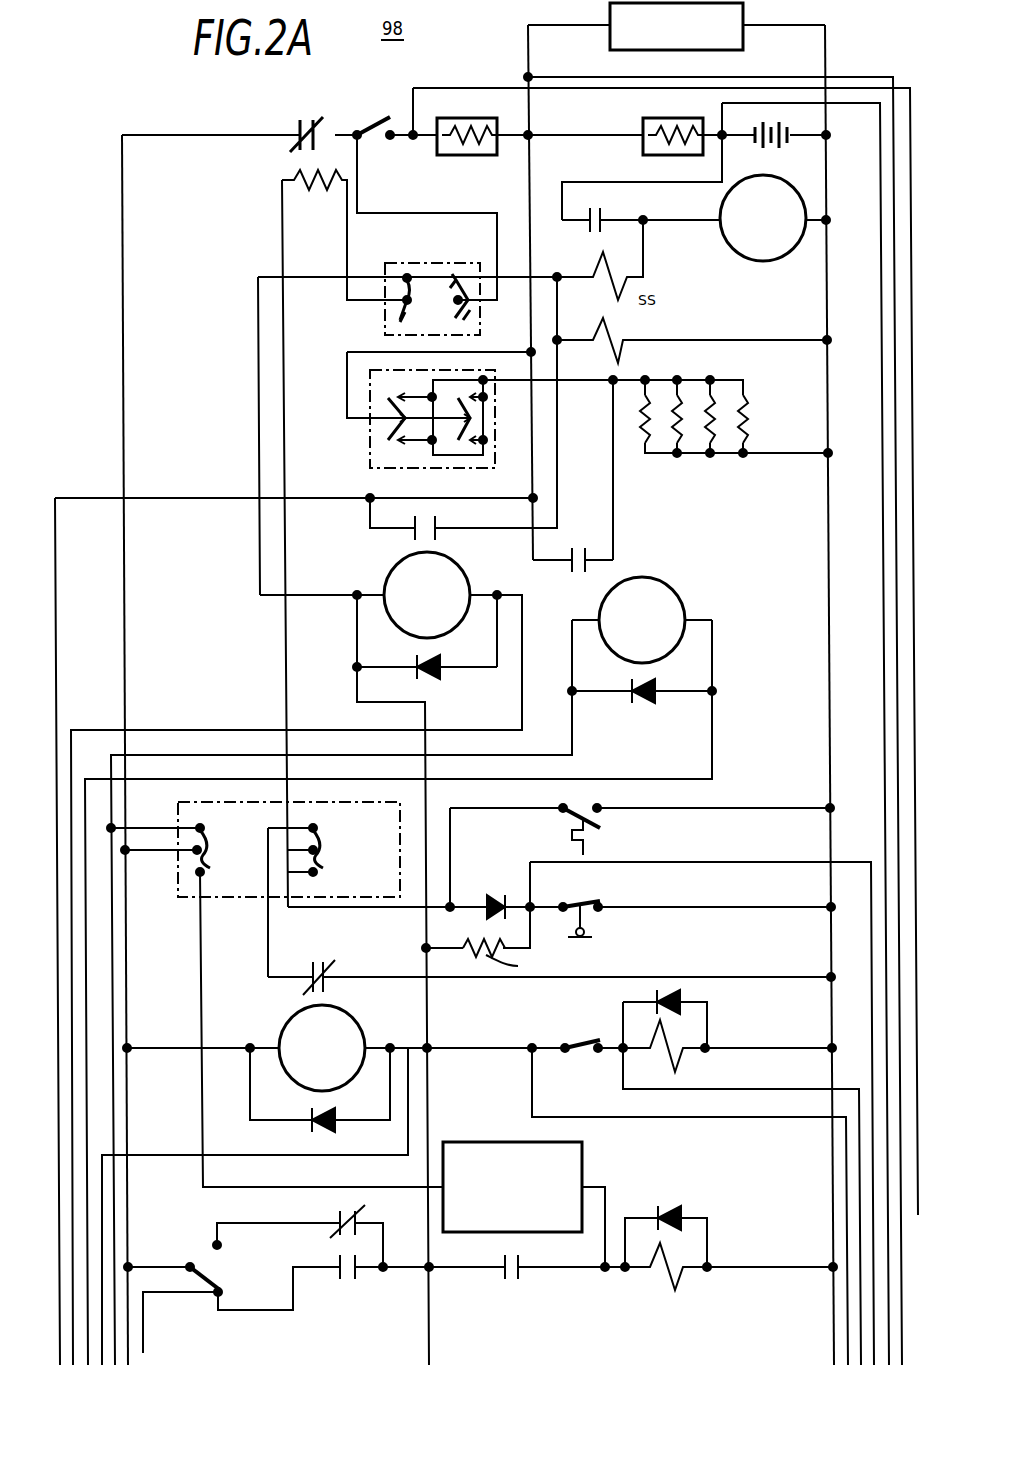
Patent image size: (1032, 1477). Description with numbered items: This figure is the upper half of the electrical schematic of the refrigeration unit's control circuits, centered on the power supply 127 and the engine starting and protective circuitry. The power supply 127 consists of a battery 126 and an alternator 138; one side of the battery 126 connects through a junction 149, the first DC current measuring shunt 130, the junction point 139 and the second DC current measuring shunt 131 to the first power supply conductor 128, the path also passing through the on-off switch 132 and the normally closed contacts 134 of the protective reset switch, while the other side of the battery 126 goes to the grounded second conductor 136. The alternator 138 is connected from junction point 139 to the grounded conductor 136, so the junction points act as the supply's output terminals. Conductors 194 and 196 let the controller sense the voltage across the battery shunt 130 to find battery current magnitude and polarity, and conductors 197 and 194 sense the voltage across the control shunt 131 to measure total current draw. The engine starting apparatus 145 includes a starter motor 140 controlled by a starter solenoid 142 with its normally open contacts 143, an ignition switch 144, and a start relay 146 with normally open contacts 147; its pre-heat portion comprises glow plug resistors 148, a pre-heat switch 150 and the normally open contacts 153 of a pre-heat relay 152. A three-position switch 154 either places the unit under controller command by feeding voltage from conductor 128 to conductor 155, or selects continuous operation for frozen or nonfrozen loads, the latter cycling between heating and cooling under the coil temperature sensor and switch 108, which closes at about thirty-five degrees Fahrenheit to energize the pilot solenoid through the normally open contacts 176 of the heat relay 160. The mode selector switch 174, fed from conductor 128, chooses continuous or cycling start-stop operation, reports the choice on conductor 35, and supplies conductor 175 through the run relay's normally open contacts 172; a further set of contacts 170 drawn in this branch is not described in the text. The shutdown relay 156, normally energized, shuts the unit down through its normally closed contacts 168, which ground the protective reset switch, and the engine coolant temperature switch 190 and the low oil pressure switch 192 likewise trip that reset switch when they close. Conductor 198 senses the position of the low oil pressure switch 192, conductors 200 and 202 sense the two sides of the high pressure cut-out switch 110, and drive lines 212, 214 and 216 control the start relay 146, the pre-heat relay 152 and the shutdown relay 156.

The coil temperature sensor and switch 108 is at (586, 1160).
The high refrigerant pressure cut-out switch 110 is at (586, 1050).
The battery 126 is at (772, 150).
The power supply 127 is at (801, 58).
The first power supply conductor 128 is at (122, 150).
The first DC current measuring shunt 130 is at (645, 150).
The second DC current measuring shunt 131 is at (448, 157).
The on-off switch 132 is at (385, 115).
The normally closed contacts 134 is at (303, 120).
The second power supply conductor 136 is at (830, 249).
The alternator 138 is at (612, 50).
The junction point 139 is at (530, 135).
The starter motor 140 is at (762, 262).
The starter solenoid 142 is at (594, 319).
The normally open contacts 143 is at (598, 210).
The ignition switch 144 is at (430, 265).
The engine starting apparatus 145 is at (716, 259).
The start relay 146 is at (513, 584).
The normally open contacts 147 is at (413, 538).
The glow plug resistors 148 is at (748, 400).
The junction 149 is at (722, 142).
The pre-heat switch 150 is at (370, 452).
The pre-heat relay 152 is at (722, 609).
The normally open contacts 153 is at (590, 548).
The three-position switch 154 is at (231, 898).
The conductor 155 is at (114, 1000).
The shutdown relay 156 is at (409, 1029).
The heat relay 160 is at (577, 1309).
The normally closed contacts 168 is at (325, 948).
The switch 170 is at (342, 1215).
The normally open contacts 172 is at (348, 1282).
The mode selector switch 174 is at (215, 1245).
The conductor 175 is at (431, 1075).
The normally open contacts 176 is at (508, 1280).
The engine coolant temperature switch 190 is at (570, 816).
The low oil pressure switch 192 is at (592, 913).
The conductor 194 is at (840, 77).
The conductor 196 is at (848, 103).
The conductor 197 is at (423, 88).
The conductor 198 is at (748, 862).
The conductor 200 is at (750, 1089).
The conductor 202 is at (760, 1117).
The conductor 212 is at (72, 1352).
The conductor 214 is at (88, 1328).
The conductor 216 is at (102, 1155).
The conductor 35 is at (145, 1300).